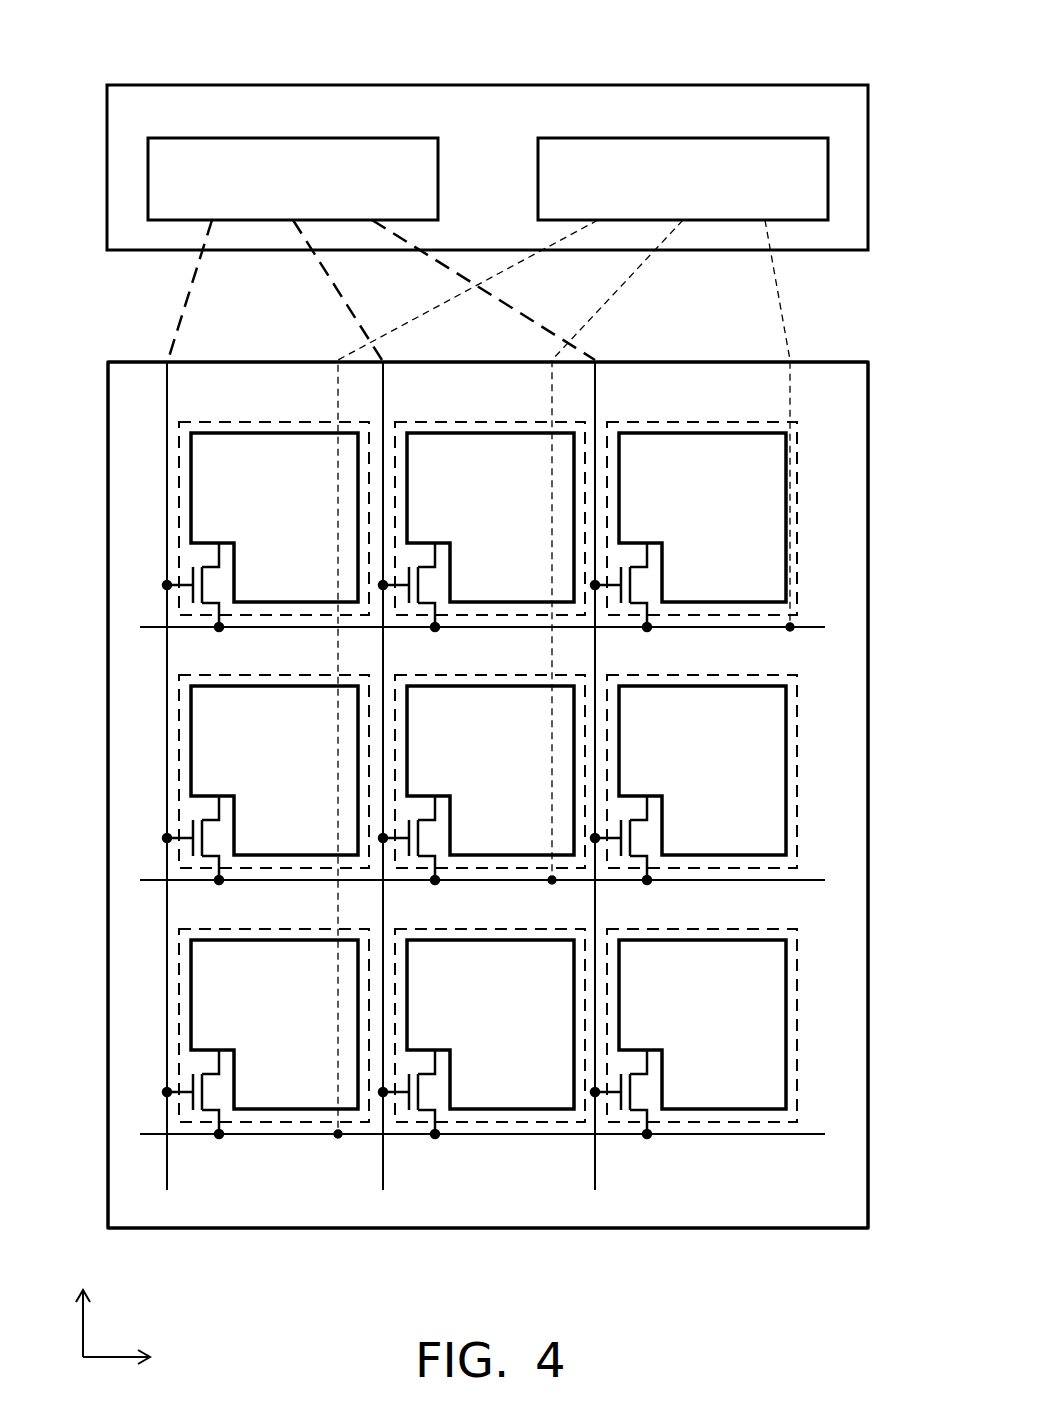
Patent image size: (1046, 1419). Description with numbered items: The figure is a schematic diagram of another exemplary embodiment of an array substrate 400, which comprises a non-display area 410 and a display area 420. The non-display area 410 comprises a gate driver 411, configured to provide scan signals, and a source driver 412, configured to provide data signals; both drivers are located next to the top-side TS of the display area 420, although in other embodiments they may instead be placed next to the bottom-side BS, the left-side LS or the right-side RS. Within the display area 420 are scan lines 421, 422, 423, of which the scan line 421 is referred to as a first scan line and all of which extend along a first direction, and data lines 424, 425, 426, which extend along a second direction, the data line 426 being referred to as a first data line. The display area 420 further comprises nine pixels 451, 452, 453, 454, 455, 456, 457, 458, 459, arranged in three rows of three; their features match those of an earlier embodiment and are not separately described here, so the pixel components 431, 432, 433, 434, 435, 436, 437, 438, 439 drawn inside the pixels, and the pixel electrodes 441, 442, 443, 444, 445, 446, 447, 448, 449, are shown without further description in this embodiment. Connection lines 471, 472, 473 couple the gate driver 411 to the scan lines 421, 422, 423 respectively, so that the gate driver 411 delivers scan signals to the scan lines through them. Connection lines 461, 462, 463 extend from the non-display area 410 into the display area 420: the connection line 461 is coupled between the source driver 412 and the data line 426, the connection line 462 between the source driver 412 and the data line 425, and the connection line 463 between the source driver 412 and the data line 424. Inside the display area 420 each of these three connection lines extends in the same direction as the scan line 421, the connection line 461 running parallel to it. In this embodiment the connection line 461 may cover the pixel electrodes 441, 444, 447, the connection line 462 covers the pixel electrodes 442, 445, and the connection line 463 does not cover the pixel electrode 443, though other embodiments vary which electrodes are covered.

The array substrate 400 is at (914, 41).
The non-display area 410 is at (850, 170).
The gate driver 411 is at (148, 138).
The source driver 412 is at (538, 138).
The display area 420 is at (850, 393).
The scan line 421 is at (167, 1172).
The scan line 422 is at (383, 1172).
The scan line 423 is at (595, 1172).
The data line 424 is at (810, 622).
The data line 425 is at (810, 875).
The data line 426 is at (810, 1129).
The transistor 431 is at (212, 584).
The transistor 432 is at (428, 584).
The transistor 433 is at (640, 584).
The transistor 434 is at (212, 837).
The transistor 435 is at (428, 837).
The transistor 436 is at (640, 837).
The transistor 437 is at (212, 1091).
The transistor 438 is at (428, 1091).
The transistor 439 is at (640, 1091).
The pixel electrode 441 is at (248, 514).
The pixel electrode 442 is at (464, 514).
The pixel electrode 443 is at (676, 514).
The pixel electrode 444 is at (248, 767).
The pixel electrode 445 is at (464, 767).
The pixel electrode 446 is at (676, 767).
The pixel electrode 447 is at (248, 1021).
The pixel electrode 448 is at (464, 1021).
The pixel electrode 449 is at (676, 1021).
The pixel 451 is at (182, 425).
The pixel 452 is at (398, 425).
The pixel 453 is at (610, 425).
The pixel 454 is at (182, 678).
The pixel 455 is at (398, 678).
The pixel 456 is at (610, 678).
The pixel 457 is at (182, 932).
The pixel 458 is at (398, 932).
The pixel 459 is at (610, 932).
The connection line 461 is at (417, 318).
The connection line 462 is at (605, 303).
The connection line 463 is at (775, 277).
The connection line 471 is at (189, 292).
The connection line 472 is at (332, 282).
The connection line 473 is at (460, 278).
The top-side TS is at (828, 362).
The left-side LS is at (105, 1178).
The right-side RS is at (870, 1178).
The bottom-side BS is at (782, 1232).